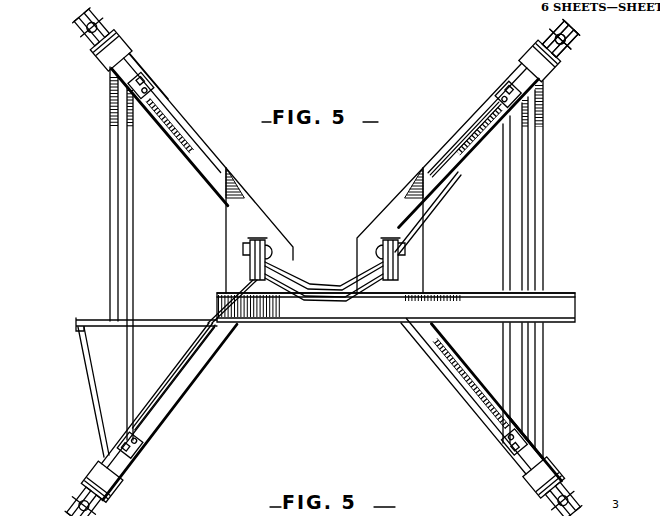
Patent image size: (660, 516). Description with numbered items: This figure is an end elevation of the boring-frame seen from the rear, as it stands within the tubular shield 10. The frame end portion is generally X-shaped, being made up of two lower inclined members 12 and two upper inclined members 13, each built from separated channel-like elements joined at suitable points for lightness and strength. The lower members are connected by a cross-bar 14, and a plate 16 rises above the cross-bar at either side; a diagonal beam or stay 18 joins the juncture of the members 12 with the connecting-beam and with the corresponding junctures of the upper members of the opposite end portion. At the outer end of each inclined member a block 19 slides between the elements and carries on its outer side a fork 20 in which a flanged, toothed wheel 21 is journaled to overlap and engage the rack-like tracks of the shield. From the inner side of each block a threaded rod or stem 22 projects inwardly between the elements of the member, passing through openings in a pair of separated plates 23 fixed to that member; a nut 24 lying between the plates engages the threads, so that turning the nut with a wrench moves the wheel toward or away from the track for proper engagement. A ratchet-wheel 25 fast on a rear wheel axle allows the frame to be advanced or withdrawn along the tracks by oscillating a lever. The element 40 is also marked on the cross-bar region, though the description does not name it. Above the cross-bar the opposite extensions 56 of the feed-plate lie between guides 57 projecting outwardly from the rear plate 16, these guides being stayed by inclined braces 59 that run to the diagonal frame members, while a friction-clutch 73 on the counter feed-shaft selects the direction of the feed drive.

The shield 10 is at (112, 280).
The lower inclined member 12 is at (193, 379).
The upper inclined member 13 is at (212, 156).
The cross-bar 14 is at (399, 309).
The plate 16 is at (233, 252).
The diagonal beam or stay 18 is at (505, 243).
The block 19 is at (128, 66).
The fork 20 is at (560, 49).
The wheel 21 is at (566, 24).
The threaded rod or stem 22 is at (180, 126).
The plate 23 is at (148, 81).
The nut 24 is at (141, 68).
The ratchet-wheel 25 is at (63, 499).
The beam flange 40 is at (559, 292).
The extension 56 is at (322, 287).
The guide 57 is at (257, 243).
The inclined brace 59 is at (452, 168).
The friction-clutch 73 is at (73, 321).